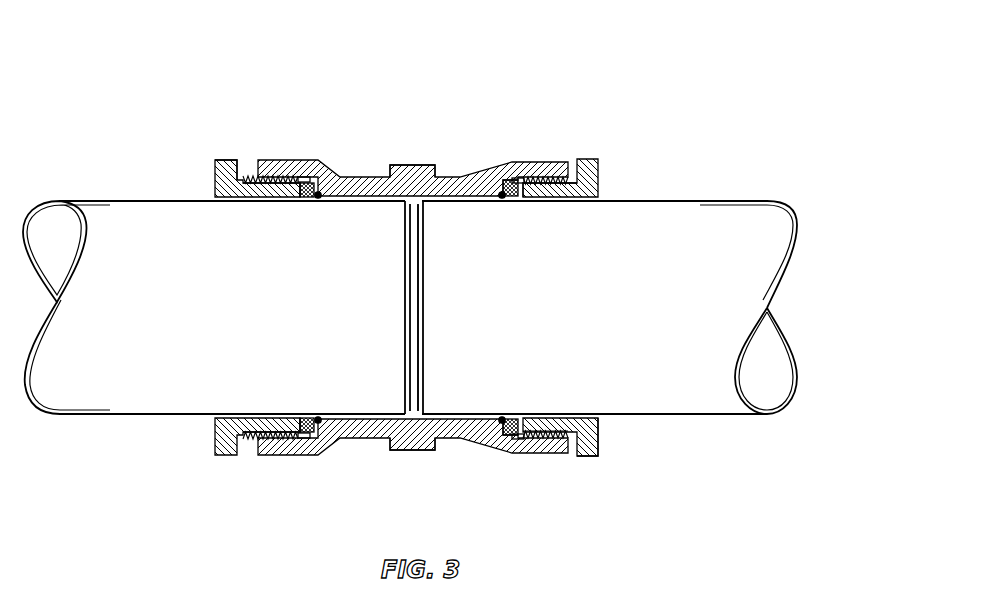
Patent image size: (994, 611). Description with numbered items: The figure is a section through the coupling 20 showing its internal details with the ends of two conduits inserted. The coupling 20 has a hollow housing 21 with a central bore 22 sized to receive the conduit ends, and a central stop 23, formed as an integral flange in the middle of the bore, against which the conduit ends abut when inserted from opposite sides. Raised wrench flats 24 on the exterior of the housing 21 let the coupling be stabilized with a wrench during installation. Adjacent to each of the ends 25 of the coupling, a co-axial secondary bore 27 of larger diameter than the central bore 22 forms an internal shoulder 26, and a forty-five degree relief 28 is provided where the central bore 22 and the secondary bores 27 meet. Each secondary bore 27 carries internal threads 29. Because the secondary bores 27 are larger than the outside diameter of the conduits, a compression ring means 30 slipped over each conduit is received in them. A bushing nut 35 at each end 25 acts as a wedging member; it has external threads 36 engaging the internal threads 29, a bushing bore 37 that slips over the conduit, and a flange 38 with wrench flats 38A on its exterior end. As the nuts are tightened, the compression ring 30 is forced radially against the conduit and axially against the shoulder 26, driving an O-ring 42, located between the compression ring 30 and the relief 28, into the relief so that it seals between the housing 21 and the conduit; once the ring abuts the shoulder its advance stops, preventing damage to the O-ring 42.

The coupling 20 is at (148, 76).
The hollow housing 21 is at (448, 177).
The central bore 22 is at (458, 197).
The central stop 23 is at (422, 215).
The raised wrench flats 24 is at (403, 164).
The ends of the coupling 25 is at (250, 444).
The internal shoulder 26 is at (308, 197).
The secondary bore 27 is at (525, 177).
The 45 degree relief 28 is at (320, 198).
The internal threads 29 is at (550, 447).
The compression ring means 30 is at (283, 180).
The bushing nut 35 is at (205, 440).
The external threads 36 is at (233, 453).
The bushing bore 37 is at (233, 198).
The flange 38 is at (217, 190).
The wrench flats 38A is at (223, 157).
The O-ring 42 is at (319, 416).